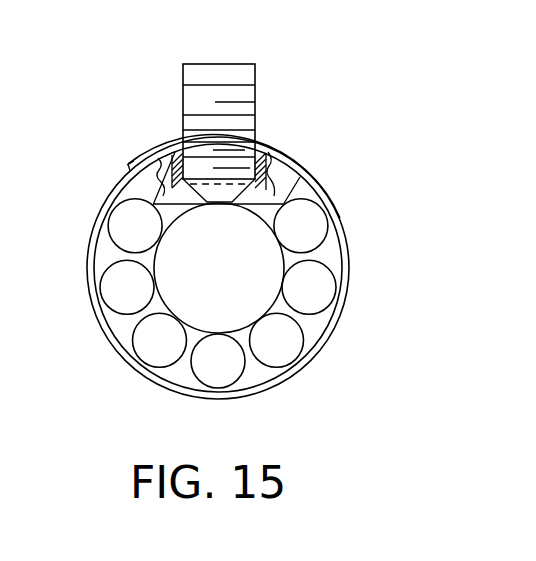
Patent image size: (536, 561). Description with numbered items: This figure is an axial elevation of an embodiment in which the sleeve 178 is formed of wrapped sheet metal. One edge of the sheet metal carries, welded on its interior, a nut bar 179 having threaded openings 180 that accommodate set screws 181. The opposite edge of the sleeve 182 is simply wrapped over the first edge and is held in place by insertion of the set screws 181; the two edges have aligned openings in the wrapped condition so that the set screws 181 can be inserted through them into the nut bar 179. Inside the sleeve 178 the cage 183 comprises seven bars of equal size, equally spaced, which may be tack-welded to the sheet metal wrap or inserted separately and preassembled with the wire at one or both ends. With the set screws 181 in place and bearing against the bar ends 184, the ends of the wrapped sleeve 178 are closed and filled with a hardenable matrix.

The sleeve 178 is at (352, 240).
The nut bar 179 is at (281, 183).
The threaded openings 180 is at (183, 167).
The set screws 181 is at (256, 100).
The opposite edge of the sleeve 182 is at (150, 148).
The cage 183 is at (308, 224).
The bar ends 184 is at (197, 293).